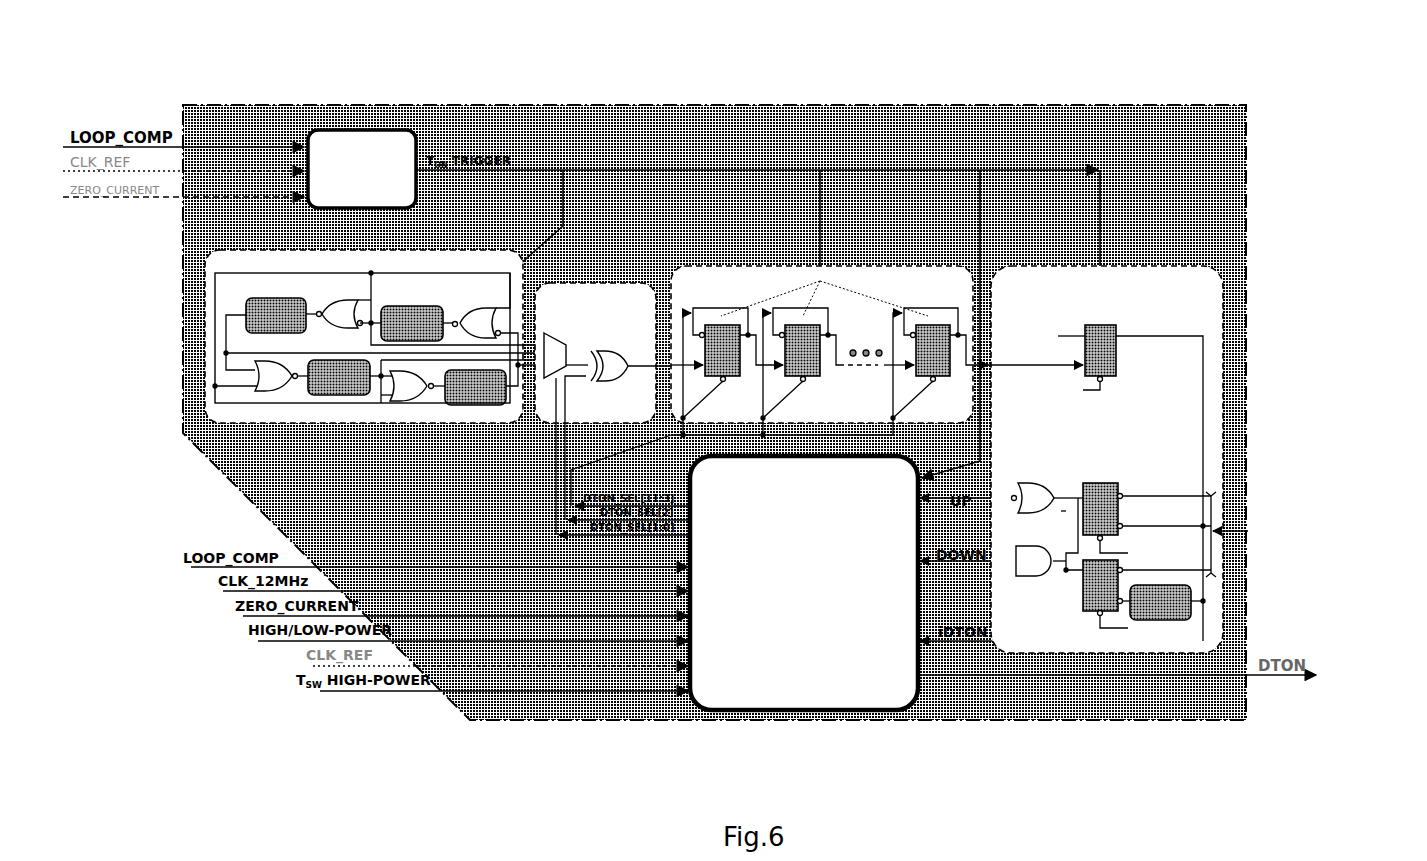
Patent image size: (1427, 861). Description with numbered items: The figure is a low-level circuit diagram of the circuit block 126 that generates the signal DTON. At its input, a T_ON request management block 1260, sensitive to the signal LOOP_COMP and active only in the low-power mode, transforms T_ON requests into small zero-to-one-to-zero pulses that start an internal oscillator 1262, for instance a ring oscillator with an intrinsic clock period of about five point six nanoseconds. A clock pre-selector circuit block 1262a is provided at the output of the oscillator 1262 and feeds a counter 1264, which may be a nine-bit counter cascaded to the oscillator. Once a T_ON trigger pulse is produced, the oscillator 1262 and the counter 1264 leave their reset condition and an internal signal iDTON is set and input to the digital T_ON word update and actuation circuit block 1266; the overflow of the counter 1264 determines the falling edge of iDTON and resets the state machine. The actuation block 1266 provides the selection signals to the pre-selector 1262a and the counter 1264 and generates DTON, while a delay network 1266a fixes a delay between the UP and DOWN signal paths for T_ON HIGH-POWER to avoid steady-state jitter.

The circuit block 126 is at (1140, 100).
The T_ON request management block 1260 is at (344, 126).
The internal oscillator 1262 is at (420, 405).
The clock pre-selector circuit block 1262a is at (570, 300).
The counter 1264 is at (842, 275).
The digital T_ON word update and actuation circuit block 1266 is at (826, 680).
The delay network 1266a is at (1216, 582).